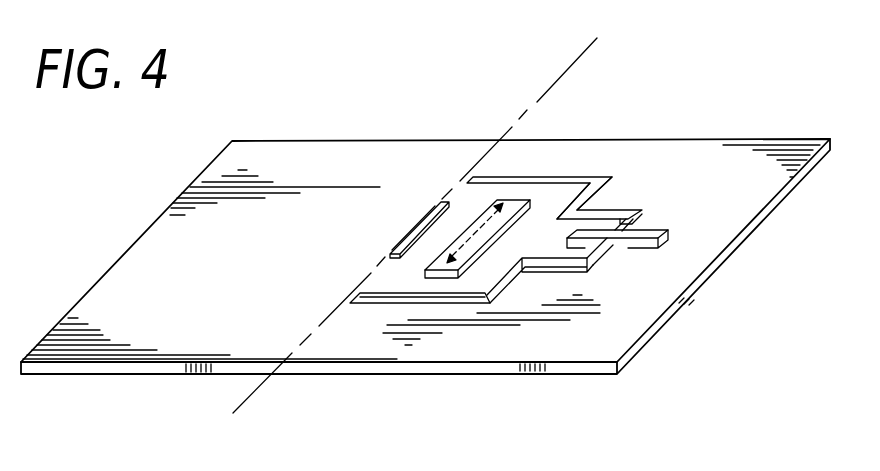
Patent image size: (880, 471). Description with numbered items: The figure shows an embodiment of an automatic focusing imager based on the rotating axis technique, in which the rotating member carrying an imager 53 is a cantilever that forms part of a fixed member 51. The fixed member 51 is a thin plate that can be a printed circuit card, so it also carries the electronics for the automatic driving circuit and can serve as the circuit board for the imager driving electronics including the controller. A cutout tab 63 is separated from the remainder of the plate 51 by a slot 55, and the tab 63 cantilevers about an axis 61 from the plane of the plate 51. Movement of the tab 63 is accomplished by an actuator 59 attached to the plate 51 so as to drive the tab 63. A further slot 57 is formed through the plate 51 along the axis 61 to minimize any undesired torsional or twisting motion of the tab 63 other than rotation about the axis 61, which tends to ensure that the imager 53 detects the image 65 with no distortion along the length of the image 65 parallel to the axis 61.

The fixed member 51 is at (762, 139).
The imager 53 is at (513, 202).
The slot 55 is at (418, 297).
The slot 57 is at (418, 230).
The actuator 59 is at (653, 230).
The axis 61 is at (556, 82).
The cutout tab 63 is at (570, 192).
The image 65 is at (468, 242).